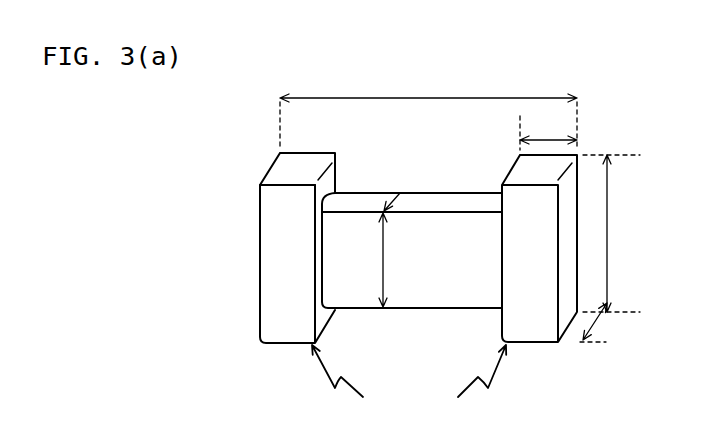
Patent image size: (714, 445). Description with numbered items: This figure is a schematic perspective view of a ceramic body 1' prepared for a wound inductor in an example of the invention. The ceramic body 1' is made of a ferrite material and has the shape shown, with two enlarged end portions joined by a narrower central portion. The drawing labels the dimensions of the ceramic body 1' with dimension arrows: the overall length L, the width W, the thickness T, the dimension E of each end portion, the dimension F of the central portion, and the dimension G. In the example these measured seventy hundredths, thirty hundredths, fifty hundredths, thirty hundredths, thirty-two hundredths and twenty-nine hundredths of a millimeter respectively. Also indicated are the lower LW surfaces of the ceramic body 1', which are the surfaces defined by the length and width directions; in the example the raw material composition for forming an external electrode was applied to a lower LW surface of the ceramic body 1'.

The ceramic body 1' is at (378, 248).
The length dimension L is at (428, 106).
The end portion dimension E is at (534, 137).
The thickness dimension T is at (616, 233).
The width dimension W is at (614, 327).
The gap dimension G is at (398, 184).
The dimension F is at (392, 260).
The LW surface LW is at (434, 414).